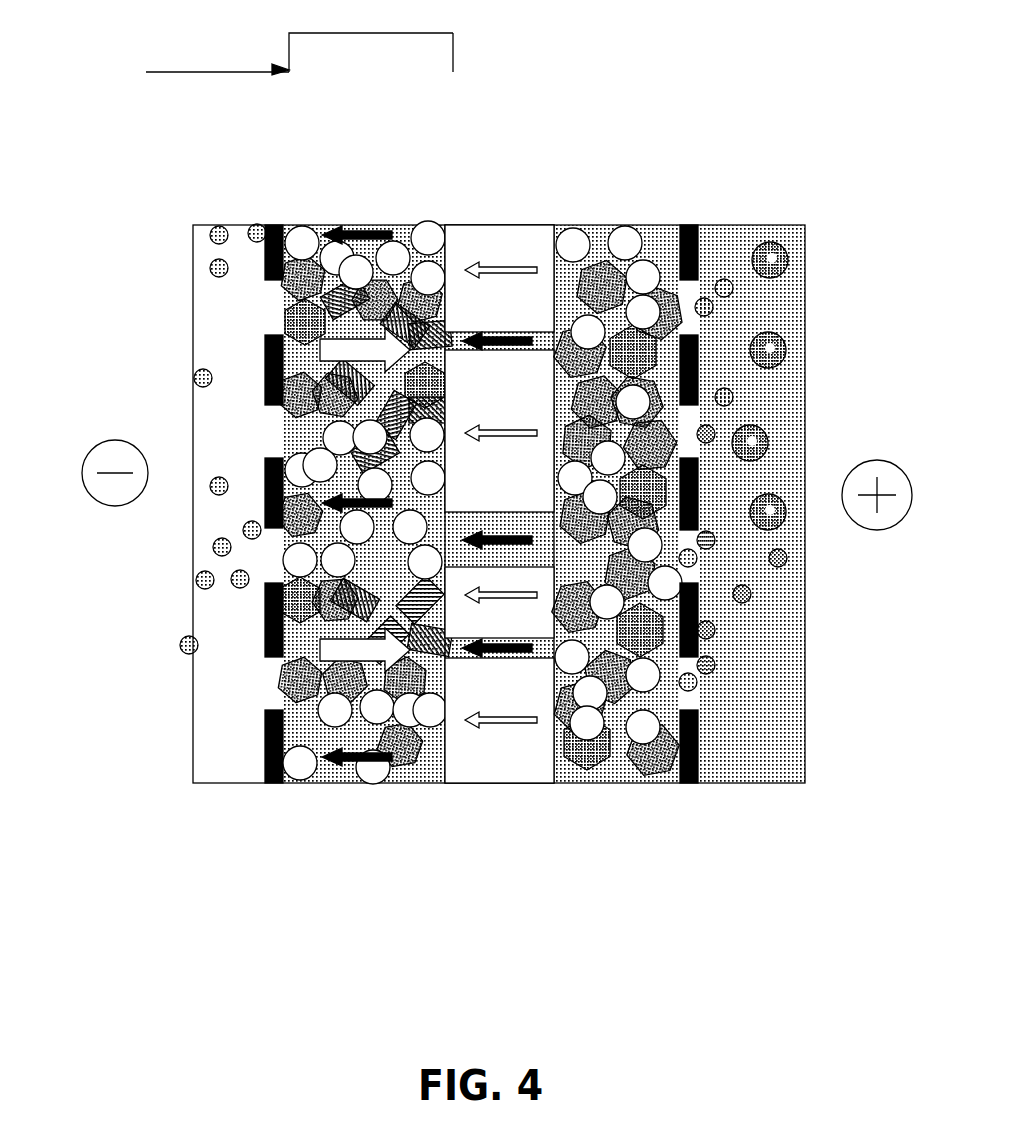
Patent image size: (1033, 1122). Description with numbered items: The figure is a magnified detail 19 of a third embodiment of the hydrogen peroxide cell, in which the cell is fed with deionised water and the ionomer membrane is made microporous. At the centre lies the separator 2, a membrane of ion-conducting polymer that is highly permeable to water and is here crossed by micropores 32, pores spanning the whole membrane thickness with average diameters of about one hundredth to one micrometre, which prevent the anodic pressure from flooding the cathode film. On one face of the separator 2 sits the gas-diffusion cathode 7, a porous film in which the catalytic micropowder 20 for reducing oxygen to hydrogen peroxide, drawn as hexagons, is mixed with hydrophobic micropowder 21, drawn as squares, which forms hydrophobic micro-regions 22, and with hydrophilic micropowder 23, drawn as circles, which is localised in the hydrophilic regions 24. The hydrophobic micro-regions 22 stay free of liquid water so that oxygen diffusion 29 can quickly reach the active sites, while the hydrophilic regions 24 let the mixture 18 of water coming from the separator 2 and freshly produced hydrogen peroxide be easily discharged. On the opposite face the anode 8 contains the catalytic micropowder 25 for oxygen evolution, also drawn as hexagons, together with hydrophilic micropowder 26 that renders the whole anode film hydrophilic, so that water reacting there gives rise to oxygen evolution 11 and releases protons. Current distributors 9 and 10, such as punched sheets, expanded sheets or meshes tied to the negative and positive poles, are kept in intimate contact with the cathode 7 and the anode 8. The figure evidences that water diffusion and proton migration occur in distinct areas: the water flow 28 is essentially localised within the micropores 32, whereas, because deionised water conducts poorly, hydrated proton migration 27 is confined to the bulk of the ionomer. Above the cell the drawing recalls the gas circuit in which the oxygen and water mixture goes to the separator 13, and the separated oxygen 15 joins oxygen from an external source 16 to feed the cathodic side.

The separator 2 is at (520, 227).
The gas-diffusion cathode 7 is at (266, 499).
The anode 8 is at (726, 438).
The electric current distributor 9 is at (243, 605).
The electric current distributor 10 is at (700, 240).
The oxygen evolution 11 is at (790, 350).
The separator 13 is at (553, 73).
The separated oxygen 15 is at (455, 50).
The external oxygen source 16 is at (237, 72).
The mixture of water and hydrogen peroxide 18 is at (212, 555).
The detail 19 is at (695, 800).
The catalytic micropowder for oxygen reduction 20 is at (290, 310).
The hydrophobic micropowder 21 is at (290, 292).
The hydrophobic micro-regions 22 is at (230, 340).
The hydrophilic micropowder 23 is at (267, 230).
The hydrophilic regions 24 is at (230, 488).
The catalytic micropowder for oxygen evolution 25 is at (627, 567).
The hydrophilic micropowder 26 is at (645, 673).
The hydrated proton migration 27 is at (472, 227).
The water flow 28 is at (467, 650).
The oxygen diffusion 29 is at (262, 748).
The micropores 32 is at (607, 770).